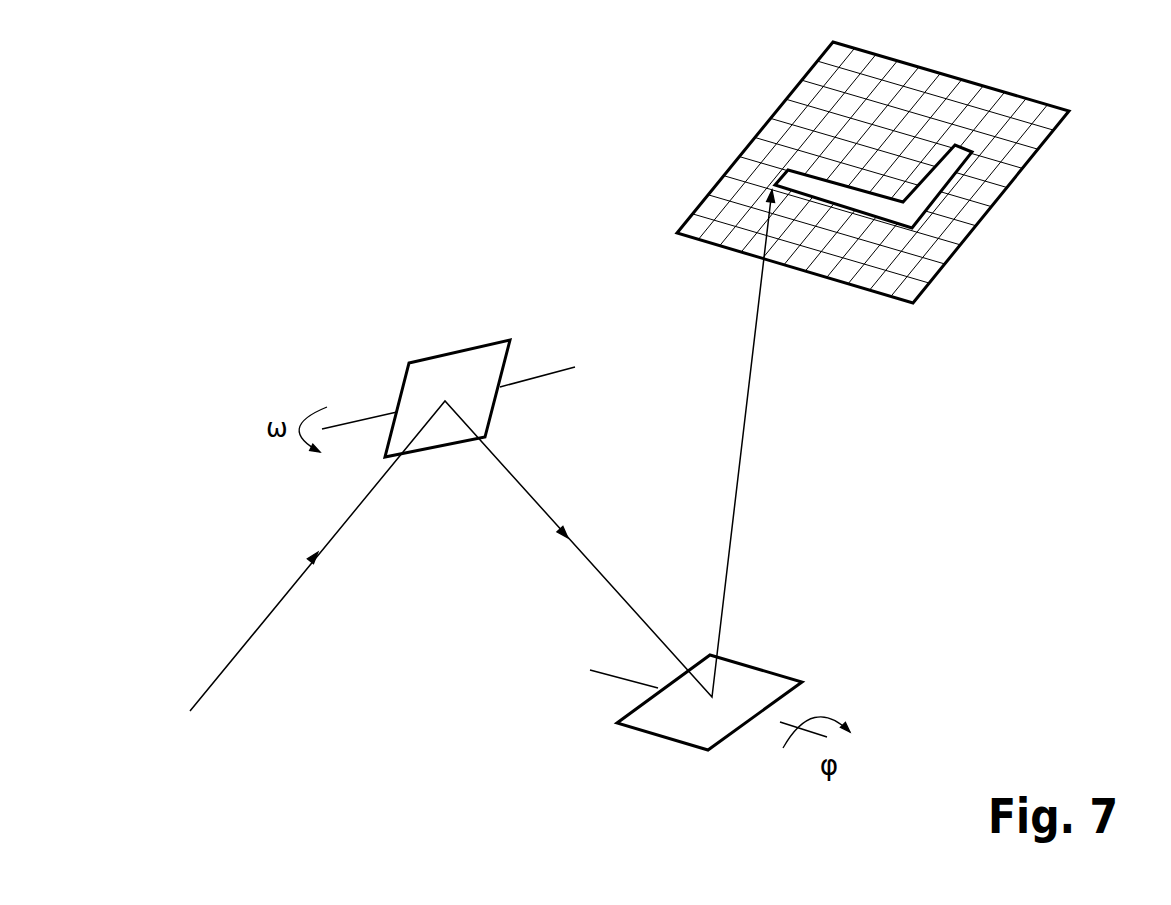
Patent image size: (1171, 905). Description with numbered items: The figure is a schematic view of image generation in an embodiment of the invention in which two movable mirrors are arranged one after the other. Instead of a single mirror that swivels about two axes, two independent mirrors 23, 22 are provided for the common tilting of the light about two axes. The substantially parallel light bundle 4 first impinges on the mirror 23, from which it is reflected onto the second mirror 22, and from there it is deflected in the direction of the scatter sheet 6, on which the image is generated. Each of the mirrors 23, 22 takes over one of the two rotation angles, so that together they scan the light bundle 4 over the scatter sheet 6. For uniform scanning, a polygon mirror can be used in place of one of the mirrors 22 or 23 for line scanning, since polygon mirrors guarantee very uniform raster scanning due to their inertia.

The light bundle 4 is at (278, 610).
The scatter sheet 6 is at (1070, 112).
The mirror 22 is at (802, 682).
The mirror 23 is at (485, 428).